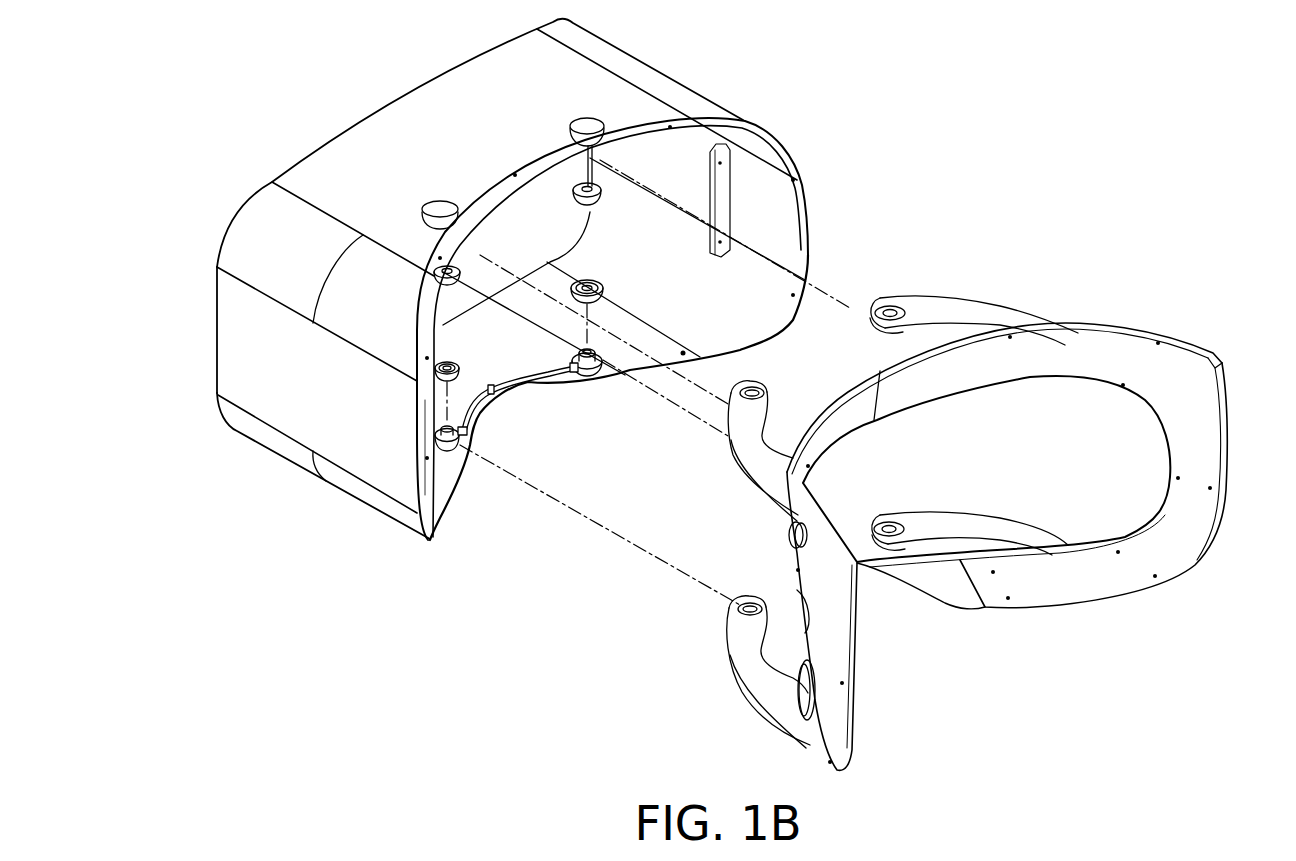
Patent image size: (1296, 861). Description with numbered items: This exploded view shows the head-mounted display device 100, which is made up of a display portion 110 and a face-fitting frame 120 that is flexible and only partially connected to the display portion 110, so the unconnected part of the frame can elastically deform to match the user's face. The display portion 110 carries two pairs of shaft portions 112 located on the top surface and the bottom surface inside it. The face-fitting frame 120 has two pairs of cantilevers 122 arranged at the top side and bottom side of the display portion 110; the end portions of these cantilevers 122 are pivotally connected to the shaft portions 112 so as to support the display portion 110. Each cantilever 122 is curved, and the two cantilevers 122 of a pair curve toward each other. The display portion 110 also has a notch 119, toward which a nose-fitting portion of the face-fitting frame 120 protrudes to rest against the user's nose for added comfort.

The head-mounted display device 100 is at (1288, 775).
The display portion 110 is at (297, 420).
The shaft portions 112 is at (440, 203).
The notch 119 is at (525, 413).
The face-fitting frame 120 is at (1070, 583).
The cantilevers 122 is at (988, 312).